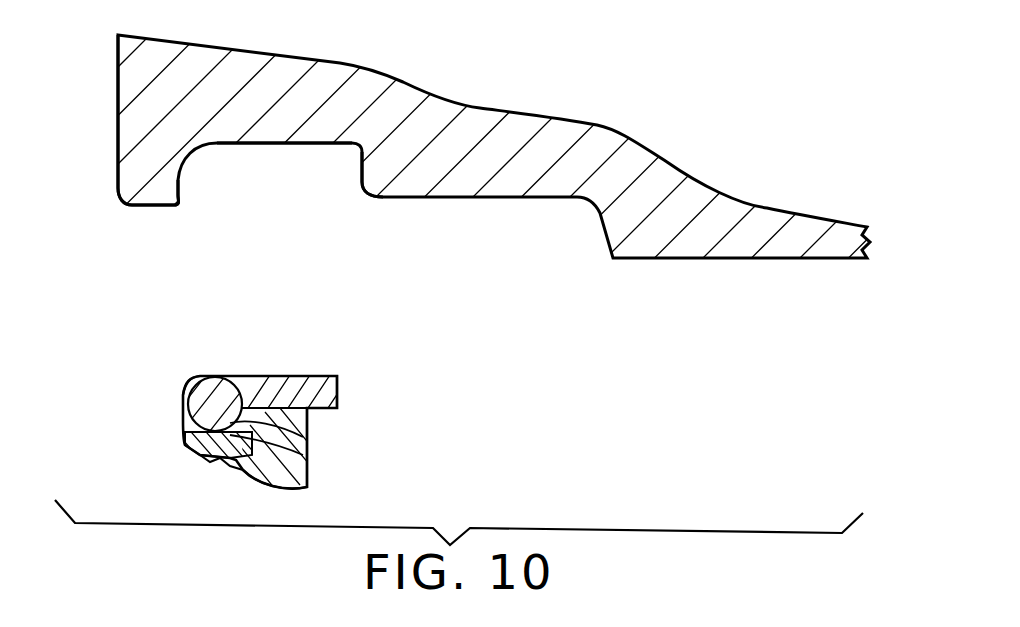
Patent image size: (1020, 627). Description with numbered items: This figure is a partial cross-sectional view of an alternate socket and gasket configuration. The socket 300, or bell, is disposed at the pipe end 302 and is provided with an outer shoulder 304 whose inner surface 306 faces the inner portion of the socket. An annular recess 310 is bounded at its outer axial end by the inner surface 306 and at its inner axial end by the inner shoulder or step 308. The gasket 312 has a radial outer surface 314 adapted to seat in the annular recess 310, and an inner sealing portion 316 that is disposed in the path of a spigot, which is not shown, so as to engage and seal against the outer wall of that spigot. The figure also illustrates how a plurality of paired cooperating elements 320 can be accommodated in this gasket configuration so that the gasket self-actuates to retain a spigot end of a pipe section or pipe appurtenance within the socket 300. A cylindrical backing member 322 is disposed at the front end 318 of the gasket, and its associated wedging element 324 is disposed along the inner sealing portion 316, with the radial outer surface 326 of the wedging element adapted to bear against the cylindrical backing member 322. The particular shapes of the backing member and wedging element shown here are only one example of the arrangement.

The socket 300 is at (550, 120).
The pipe end 302 is at (108, 93).
The outer shoulder 304 is at (132, 170).
The inner surface 306 is at (182, 195).
The inner shoulder 308 is at (358, 188).
The annular recess 310 is at (262, 155).
The gasket 312 is at (138, 408).
The radial outer surface 314 is at (250, 376).
The inner sealing portion 316 is at (300, 478).
The front end 318 is at (190, 380).
The cooperating elements 320 is at (178, 397).
The cylindrical backing member 322 is at (203, 378).
The wedging element 324 is at (230, 457).
The radial outer surface 326 is at (307, 432).